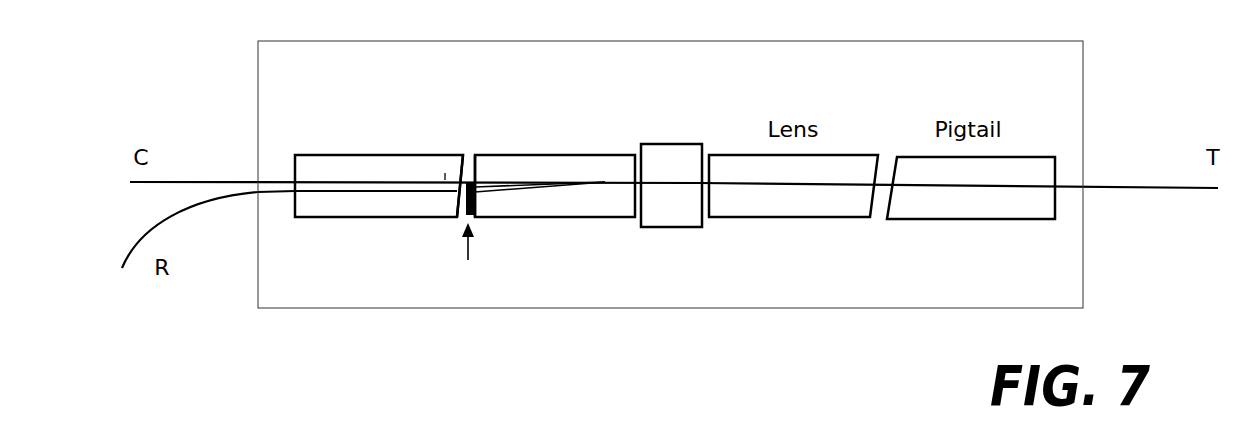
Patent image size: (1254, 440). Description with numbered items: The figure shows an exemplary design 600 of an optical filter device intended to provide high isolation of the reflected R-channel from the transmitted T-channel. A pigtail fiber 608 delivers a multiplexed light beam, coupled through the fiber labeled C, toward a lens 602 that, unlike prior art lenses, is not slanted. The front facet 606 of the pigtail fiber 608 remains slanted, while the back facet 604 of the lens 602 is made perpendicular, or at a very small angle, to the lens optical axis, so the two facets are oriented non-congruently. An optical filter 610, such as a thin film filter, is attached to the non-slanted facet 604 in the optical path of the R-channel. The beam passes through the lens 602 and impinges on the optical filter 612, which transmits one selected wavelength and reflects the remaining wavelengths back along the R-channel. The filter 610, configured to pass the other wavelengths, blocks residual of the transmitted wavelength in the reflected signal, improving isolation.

The exemplary design 600 is at (670, 174).
The lens 602 is at (623, 163).
The back facet 604 is at (475, 165).
The front facet 606 is at (457, 208).
The pigtail fiber 608 is at (315, 208).
The optical filter 610 is at (475, 217).
The optical filter 612 is at (663, 215).